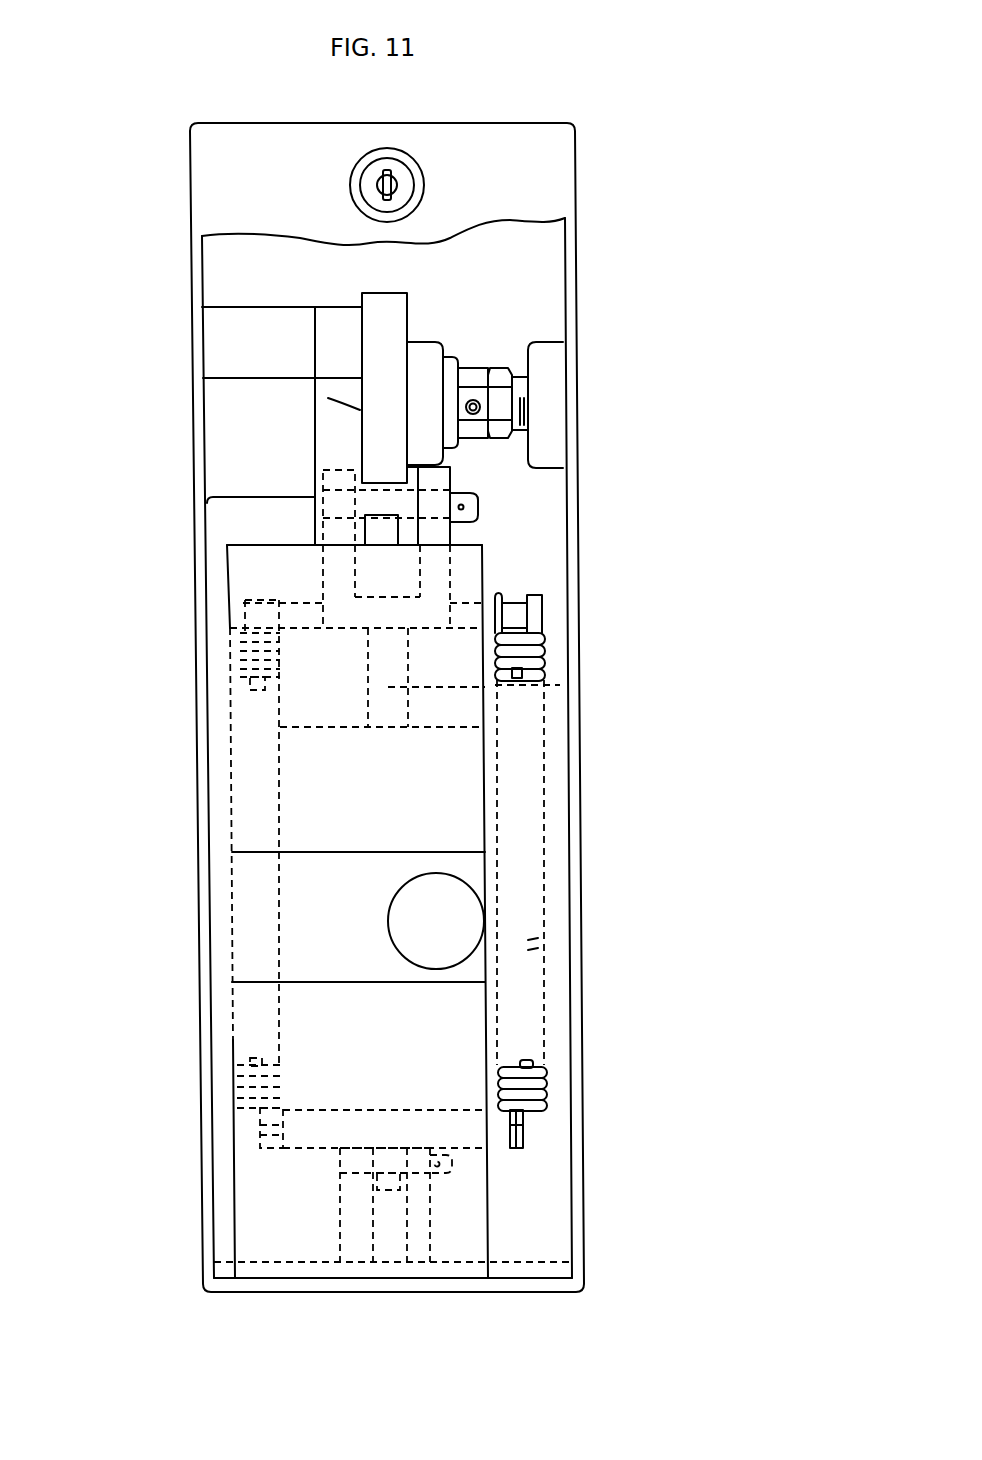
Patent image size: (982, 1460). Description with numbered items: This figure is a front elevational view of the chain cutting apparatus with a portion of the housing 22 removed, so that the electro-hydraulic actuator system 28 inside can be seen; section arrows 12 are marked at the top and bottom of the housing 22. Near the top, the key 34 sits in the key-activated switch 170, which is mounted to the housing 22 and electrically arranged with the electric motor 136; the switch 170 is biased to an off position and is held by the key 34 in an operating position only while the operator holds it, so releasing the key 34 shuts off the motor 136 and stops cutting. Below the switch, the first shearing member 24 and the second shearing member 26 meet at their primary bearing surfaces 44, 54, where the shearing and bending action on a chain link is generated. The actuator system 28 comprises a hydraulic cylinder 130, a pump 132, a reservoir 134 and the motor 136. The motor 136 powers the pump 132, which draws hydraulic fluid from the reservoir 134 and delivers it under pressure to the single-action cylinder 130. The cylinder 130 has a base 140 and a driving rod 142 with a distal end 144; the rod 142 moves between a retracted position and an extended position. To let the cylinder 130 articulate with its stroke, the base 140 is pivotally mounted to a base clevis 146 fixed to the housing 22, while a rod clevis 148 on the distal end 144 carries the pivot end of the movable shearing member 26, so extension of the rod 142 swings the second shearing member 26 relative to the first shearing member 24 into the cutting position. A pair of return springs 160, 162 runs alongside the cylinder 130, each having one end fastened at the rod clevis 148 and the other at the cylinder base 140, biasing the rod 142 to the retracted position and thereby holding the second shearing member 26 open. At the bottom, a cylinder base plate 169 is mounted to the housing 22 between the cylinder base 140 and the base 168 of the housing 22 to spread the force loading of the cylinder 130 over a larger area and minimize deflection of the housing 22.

The section line 12- 12 is at (175, 100).
The housing 22 is at (357, 1292).
The first shearing member 24 is at (330, 333).
The second shearing member 26 is at (404, 313).
The electro-hydraulic actuator system 28 is at (548, 582).
The key 34 is at (378, 181).
The primary bearing surface 44 is at (330, 398).
The primary bearing surface 54 is at (366, 393).
The hydraulic cylinder 130 is at (495, 735).
The pump 132 is at (297, 908).
The reservoir 134 is at (262, 1195).
The electric motor 136 is at (247, 580).
The base 140 is at (490, 784).
The driving rod 142 is at (548, 683).
The distal end 144 is at (388, 635).
The base clevis 146 is at (348, 1213).
The rod clevis 148 is at (337, 570).
The return spring 160 is at (238, 676).
The return spring 162 is at (527, 653).
The base of the housing 168 is at (390, 1287).
The cylinder base plate 169 is at (460, 1270).
The key-activated switch 170 is at (368, 193).